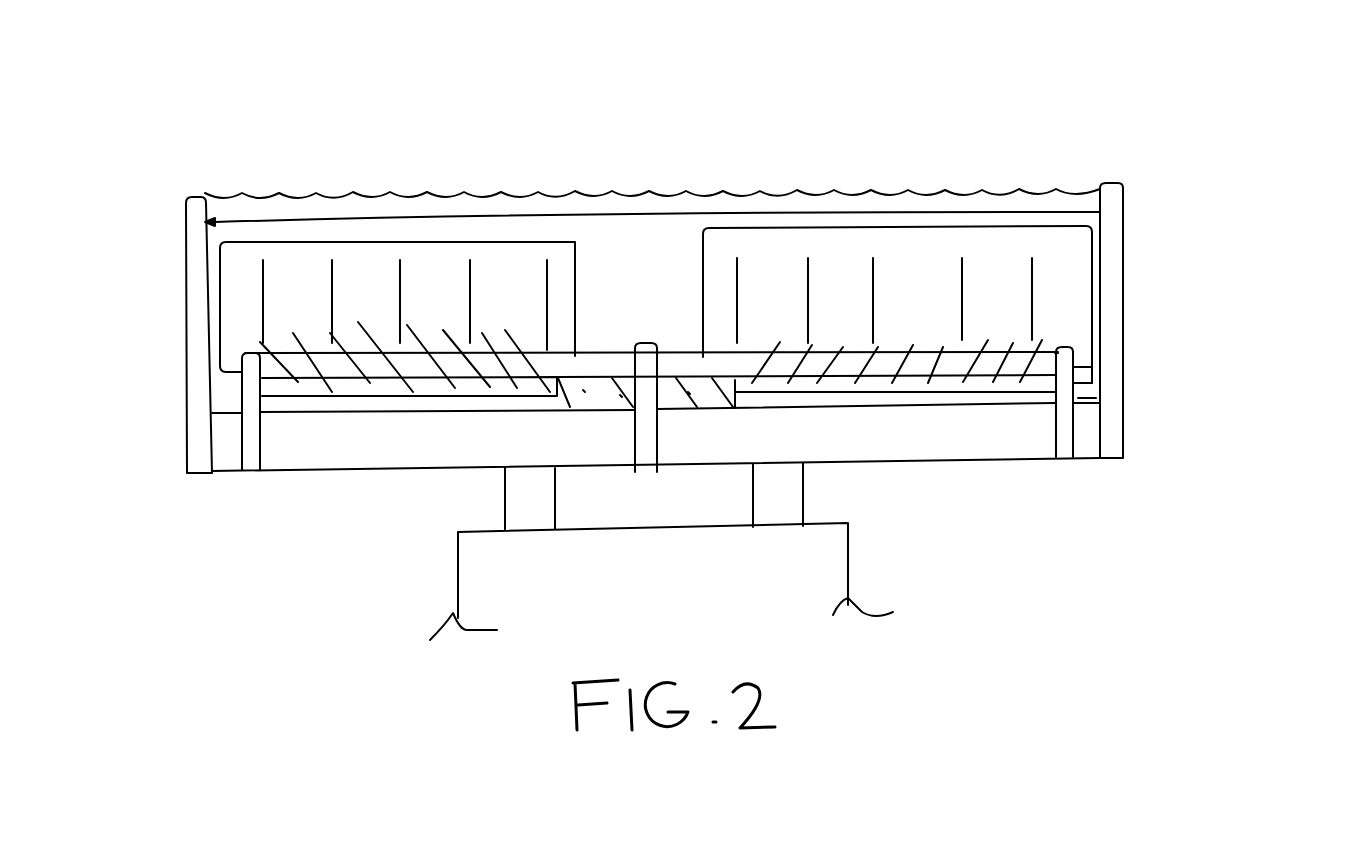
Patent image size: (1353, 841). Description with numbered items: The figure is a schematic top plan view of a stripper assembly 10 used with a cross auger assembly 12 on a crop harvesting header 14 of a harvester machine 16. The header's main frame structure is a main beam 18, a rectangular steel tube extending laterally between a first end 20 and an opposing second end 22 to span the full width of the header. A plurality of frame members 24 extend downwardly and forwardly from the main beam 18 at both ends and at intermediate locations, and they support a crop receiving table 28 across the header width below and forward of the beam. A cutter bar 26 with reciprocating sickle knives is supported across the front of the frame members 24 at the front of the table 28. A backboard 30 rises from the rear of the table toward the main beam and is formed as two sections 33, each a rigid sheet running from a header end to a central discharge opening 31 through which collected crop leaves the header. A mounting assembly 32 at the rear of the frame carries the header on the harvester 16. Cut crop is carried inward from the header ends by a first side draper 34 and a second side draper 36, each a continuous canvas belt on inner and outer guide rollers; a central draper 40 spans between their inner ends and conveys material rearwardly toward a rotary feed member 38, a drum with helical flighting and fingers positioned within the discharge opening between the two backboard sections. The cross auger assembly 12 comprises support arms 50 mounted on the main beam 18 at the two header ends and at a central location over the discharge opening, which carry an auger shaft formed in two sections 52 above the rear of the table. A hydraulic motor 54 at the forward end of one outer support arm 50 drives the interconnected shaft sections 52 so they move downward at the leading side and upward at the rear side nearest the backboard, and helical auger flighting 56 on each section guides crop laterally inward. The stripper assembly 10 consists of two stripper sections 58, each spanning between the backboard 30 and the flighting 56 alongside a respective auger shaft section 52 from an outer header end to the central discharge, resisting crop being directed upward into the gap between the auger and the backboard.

The stripper assembly 10 is at (953, 400).
The cross auger assembly 12 is at (1056, 331).
The crop harvesting header 14 is at (1222, 346).
The harvester machine 16 is at (457, 560).
The main beam 18 is at (1033, 438).
The first end 20 is at (148, 132).
The second end 22 is at (1166, 137).
The frame members 24 is at (195, 348).
The cutter bar 26 is at (953, 205).
The crop receiving table 28 is at (672, 232).
The backboard 30 is at (1087, 398).
The central discharge opening 31 is at (711, 420).
The mounting assembly 32 is at (497, 498).
The backboard sections 33 is at (392, 408).
The first side draper 34 is at (370, 255).
The second side draper 36 is at (902, 250).
The rotary feed member 38 is at (605, 385).
The central draper 40 is at (647, 273).
The support arms 50 is at (252, 435).
The auger shaft sections 52 is at (443, 333).
The hydraulic motor 54 is at (1096, 366).
The helical auger flighting 56 is at (297, 338).
The stripper sections 58 is at (452, 417).